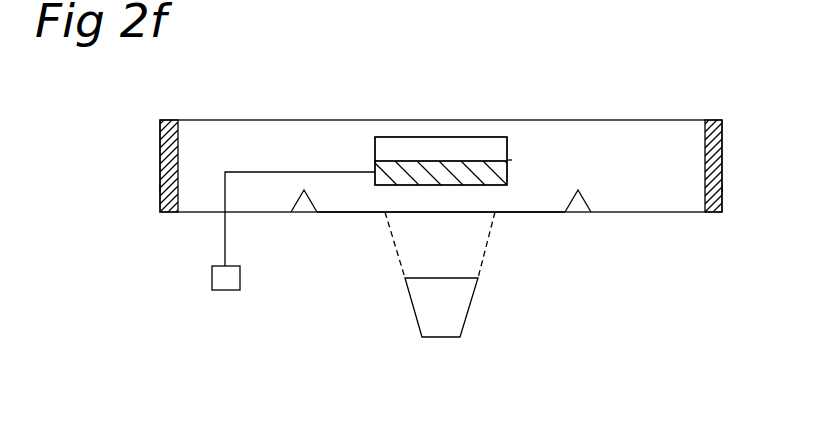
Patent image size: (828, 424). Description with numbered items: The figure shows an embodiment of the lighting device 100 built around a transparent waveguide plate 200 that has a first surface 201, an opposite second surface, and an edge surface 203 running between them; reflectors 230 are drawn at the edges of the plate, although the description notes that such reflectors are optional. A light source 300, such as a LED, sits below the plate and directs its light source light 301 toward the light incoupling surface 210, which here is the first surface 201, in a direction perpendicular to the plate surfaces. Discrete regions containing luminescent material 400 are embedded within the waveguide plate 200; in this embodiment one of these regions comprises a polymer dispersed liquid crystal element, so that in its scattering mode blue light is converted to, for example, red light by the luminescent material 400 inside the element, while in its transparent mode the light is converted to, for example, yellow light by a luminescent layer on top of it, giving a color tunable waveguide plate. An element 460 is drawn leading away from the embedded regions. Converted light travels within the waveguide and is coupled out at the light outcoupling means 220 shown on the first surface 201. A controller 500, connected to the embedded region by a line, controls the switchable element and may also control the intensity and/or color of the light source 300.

The lighting device 100 is at (652, 112).
The reflector 230 is at (160, 150).
The edge surface 203 is at (160, 188).
The luminescent material 400 is at (415, 173).
The electrical connection 460 is at (507, 160).
The controller 500 is at (212, 282).
The light outcoupling means 220 is at (302, 213).
The light incoupling surface 210 is at (413, 213).
The first surface 201 is at (523, 213).
The transparent waveguide plate 200 is at (495, 262).
The light source 300 is at (443, 346).
The light source light 301 is at (413, 250).